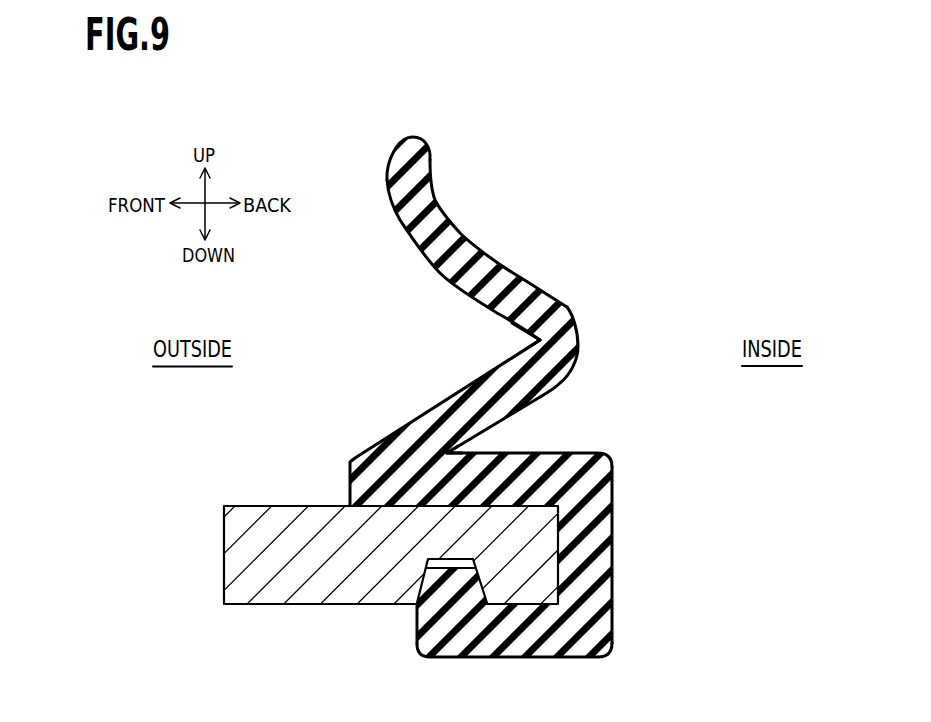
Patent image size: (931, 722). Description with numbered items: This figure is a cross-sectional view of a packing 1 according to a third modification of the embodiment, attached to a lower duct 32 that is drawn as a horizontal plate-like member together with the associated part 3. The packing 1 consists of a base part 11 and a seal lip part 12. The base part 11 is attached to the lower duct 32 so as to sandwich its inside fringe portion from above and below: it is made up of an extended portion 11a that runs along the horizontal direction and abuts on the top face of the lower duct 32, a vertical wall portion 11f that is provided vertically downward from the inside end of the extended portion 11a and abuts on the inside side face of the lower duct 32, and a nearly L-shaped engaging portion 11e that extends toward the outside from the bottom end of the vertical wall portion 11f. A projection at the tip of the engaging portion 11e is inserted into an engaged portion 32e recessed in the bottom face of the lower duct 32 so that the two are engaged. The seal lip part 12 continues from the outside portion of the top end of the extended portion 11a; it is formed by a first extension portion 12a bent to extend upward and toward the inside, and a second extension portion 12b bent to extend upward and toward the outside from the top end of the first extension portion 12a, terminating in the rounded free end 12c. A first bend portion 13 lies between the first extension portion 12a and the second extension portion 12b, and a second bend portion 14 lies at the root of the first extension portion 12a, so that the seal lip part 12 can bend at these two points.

The packing 1 is at (465, 396).
The base part 11 is at (551, 553).
The extended portion 11a is at (546, 463).
The engaging portion 11e is at (508, 650).
The vertical wall portion 11f is at (602, 555).
The seal lip part 12 is at (501, 295).
The first extension portion 12a is at (422, 433).
The second extension portion 12b is at (433, 203).
The free end of spring piece 12c is at (416, 135).
The first bend portion 13 is at (541, 338).
The second bend portion 14 is at (447, 452).
The housing 3 is at (392, 551).
The lower duct 32 is at (272, 592).
The engaged portion 32e is at (431, 572).